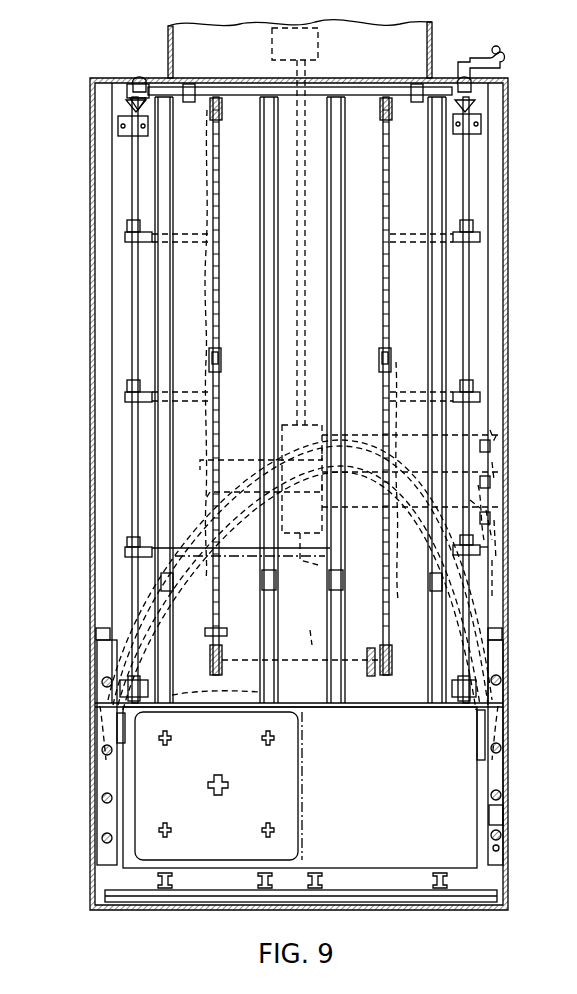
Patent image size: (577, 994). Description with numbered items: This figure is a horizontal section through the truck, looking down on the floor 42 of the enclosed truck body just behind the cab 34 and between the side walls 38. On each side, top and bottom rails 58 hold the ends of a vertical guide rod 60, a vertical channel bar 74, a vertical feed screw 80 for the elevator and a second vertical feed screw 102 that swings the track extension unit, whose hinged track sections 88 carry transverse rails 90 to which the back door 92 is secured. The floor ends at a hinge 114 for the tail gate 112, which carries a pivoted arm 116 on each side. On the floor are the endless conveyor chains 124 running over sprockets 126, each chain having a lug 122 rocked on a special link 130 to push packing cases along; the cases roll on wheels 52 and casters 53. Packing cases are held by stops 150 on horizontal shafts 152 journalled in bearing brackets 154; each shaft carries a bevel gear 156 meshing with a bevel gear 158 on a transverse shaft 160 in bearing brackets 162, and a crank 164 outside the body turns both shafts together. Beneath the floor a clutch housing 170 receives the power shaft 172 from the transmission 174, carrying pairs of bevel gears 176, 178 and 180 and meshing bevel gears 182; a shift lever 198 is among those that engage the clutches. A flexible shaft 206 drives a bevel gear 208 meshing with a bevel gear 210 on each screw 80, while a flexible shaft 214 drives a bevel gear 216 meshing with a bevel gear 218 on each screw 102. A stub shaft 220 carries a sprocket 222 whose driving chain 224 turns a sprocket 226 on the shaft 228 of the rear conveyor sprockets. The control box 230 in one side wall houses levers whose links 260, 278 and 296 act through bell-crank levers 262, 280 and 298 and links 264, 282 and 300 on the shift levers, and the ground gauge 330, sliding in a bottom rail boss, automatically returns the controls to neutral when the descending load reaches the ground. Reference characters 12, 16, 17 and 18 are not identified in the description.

The cabinet 12 is at (570, 611).
The side panel 16 is at (570, 483).
The viewing direction 17 is at (472, 43).
The rear panel 18 is at (570, 647).
The cab 34 is at (168, 65).
The side walls 38 is at (95, 320).
The floor 42 is at (455, 592).
The wheels 52 is at (268, 598).
The casters 53 is at (216, 695).
The top and bottom rails 58 is at (488, 340).
The vertical guide rods 60 is at (97, 680).
The vertical channel bar 74 is at (96, 634).
The vertical feed screw 80 is at (100, 750).
The track section 88 is at (158, 880).
The rails 90 is at (90, 898).
The back door 92 is at (410, 908).
The vertical feed screws 102 is at (100, 805).
The tail gate 112 is at (215, 890).
The hinge 114 is at (200, 712).
The pivoted arm 116 is at (121, 743).
The lug 122 is at (240, 358).
The endless conveyor chains 124 is at (213, 455).
The sprockets 126 is at (213, 118).
The special link 130 is at (209, 356).
The stops 150 is at (130, 240).
The horizontal shaft 152 is at (470, 566).
The bearing brackets 154 is at (118, 126).
The bevel gear 156 is at (128, 100).
The bevel gear 158 is at (125, 100).
The transverse shaft 160 is at (235, 108).
The bearing brackets 162 is at (190, 84).
The crank 164 is at (485, 58).
The clutch housing 170 is at (315, 428).
The power shaft 172 is at (306, 252).
The transmission 174 is at (318, 48).
The bevel gears 176 is at (568, 567).
The bevel gears 178 is at (568, 586).
The bevel gears 180 is at (566, 673).
The bevel gears 182 is at (568, 500).
The shift lever 198 is at (568, 695).
The flexible shaft 206 is at (205, 528).
The bevel gear 208 is at (97, 715).
The bevel gear 210 is at (100, 768).
The flexible shaft 214 is at (173, 580).
The bevel gear 216 is at (100, 780).
The bevel gear 218 is at (100, 825).
The stub shaft 220 is at (322, 533).
The sprocket 222 is at (263, 524).
The driving chain 224 is at (307, 560).
The sprocket 226 is at (369, 676).
The shaft 228 is at (308, 629).
The control box 230 is at (503, 812).
The link 260 is at (500, 440).
The bell-crank lever 262 is at (522, 429).
The link 264 is at (395, 432).
The link 278 is at (484, 512).
The bell-crank lever 280 is at (500, 472).
The link 282 is at (400, 470).
The link 296 is at (503, 532).
The bell crank lever 298 is at (500, 520).
The link 300 is at (490, 500).
The ground gauge 330 is at (500, 850).